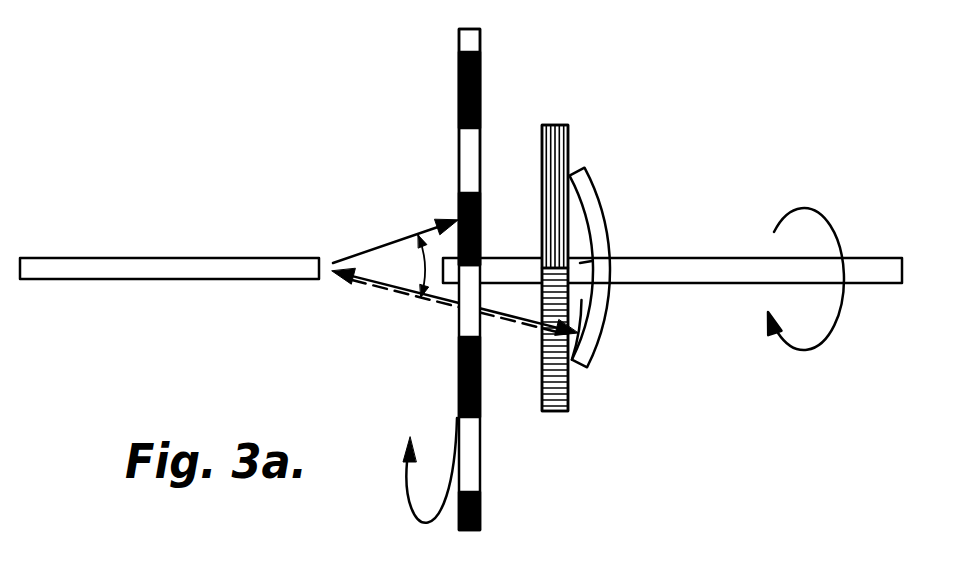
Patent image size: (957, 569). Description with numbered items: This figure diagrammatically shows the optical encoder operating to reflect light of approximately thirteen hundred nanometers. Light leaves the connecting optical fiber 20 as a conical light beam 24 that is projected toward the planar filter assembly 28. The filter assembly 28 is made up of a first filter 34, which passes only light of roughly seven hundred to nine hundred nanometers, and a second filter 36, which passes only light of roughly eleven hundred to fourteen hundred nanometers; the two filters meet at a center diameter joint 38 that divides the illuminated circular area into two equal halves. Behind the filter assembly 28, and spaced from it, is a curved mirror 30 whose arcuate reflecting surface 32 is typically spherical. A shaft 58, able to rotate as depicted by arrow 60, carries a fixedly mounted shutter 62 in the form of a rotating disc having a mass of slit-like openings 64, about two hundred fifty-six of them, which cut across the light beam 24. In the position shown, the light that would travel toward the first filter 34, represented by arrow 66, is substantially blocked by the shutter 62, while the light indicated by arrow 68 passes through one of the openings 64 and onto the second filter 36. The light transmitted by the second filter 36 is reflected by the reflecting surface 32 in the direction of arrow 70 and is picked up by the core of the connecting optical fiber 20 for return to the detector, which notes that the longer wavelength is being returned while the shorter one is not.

The connecting optical fiber 20 is at (157, 258).
The conical light beam 24 is at (422, 288).
The filter assembly 28 is at (579, 113).
The curved mirror 30 is at (597, 194).
The arcuate reflecting surface 32 is at (580, 304).
The first filter 34 is at (542, 133).
The second filter 36 is at (568, 392).
The center diameter joint 38 is at (580, 263).
The shaft 58 is at (857, 285).
The arrow 60 is at (829, 224).
The shutter 62 is at (478, 478).
The openings 64 is at (459, 108).
The arrow 66 is at (419, 242).
The arrow 68 is at (378, 282).
The arrow 70 is at (443, 306).